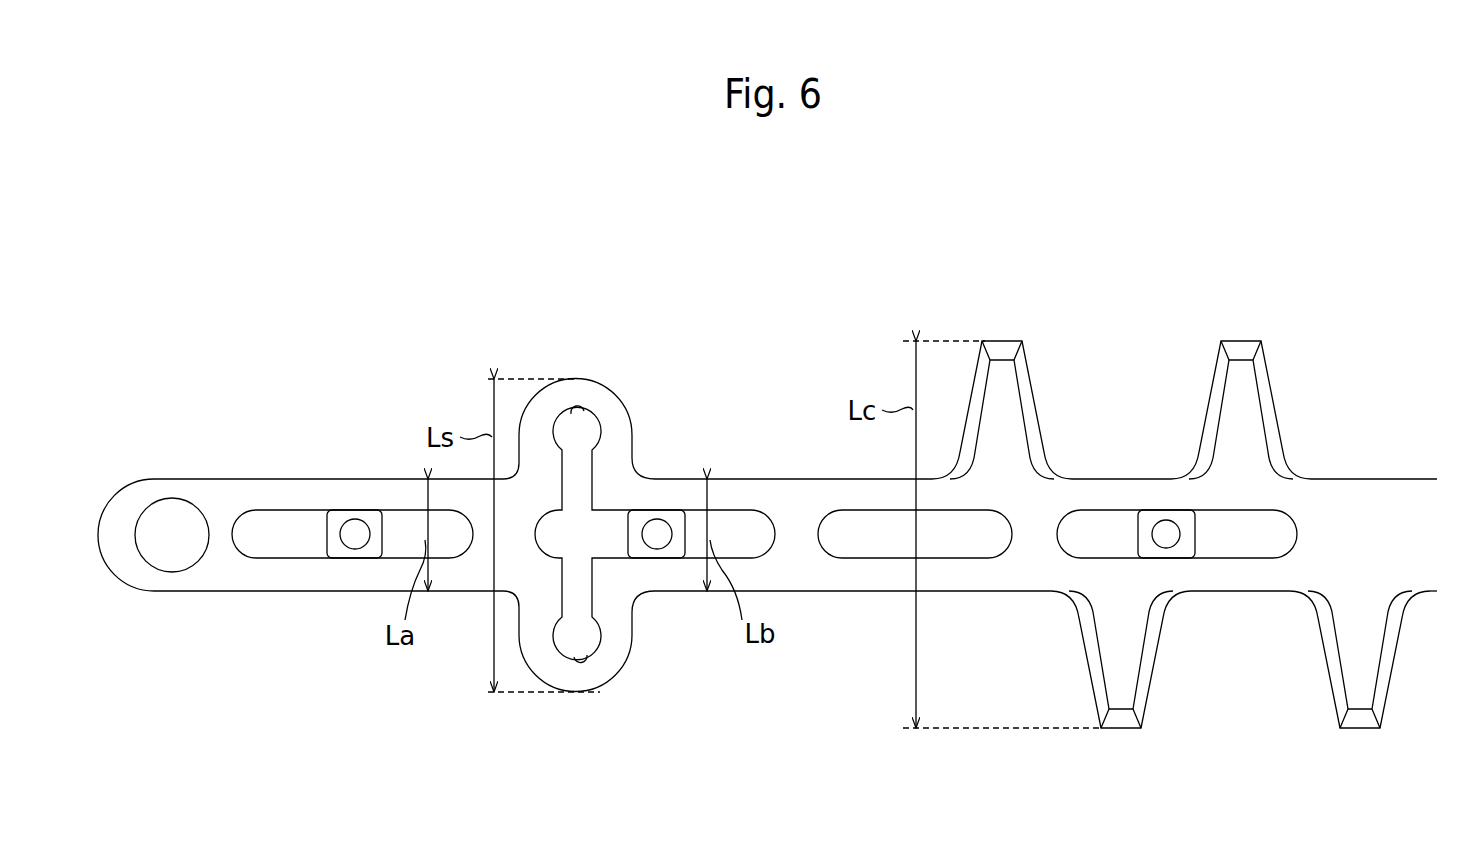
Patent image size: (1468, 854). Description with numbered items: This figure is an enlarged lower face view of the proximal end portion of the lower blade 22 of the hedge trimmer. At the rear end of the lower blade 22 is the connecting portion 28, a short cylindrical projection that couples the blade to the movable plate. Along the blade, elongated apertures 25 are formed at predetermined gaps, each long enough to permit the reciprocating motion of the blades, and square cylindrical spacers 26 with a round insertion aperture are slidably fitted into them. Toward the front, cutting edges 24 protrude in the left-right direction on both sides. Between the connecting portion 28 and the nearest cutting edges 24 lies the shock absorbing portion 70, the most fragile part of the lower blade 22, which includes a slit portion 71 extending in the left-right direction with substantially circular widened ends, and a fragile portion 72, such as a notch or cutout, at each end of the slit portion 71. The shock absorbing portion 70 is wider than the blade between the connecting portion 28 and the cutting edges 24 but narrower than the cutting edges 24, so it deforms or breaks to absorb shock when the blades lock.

The lower blade 22 is at (356, 477).
The cutting edges 24 is at (1002, 340).
The elongated apertures 25 is at (297, 545).
The square cylindrical spacers 26 is at (327, 527).
The connecting portion 28 is at (173, 518).
The shock absorbing portion 70 is at (604, 378).
The slit portion 71 is at (586, 480).
The fragile portion 72 is at (592, 416).